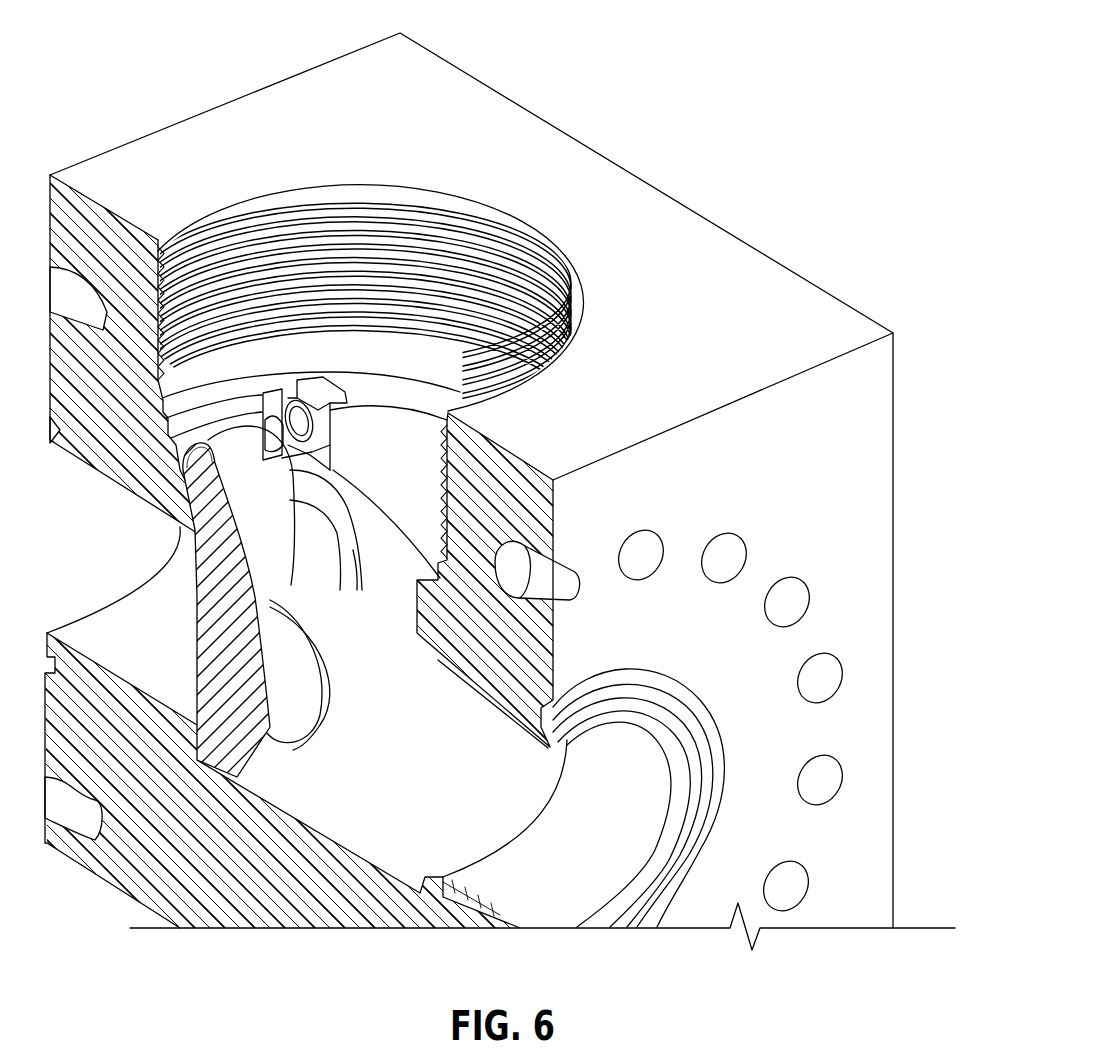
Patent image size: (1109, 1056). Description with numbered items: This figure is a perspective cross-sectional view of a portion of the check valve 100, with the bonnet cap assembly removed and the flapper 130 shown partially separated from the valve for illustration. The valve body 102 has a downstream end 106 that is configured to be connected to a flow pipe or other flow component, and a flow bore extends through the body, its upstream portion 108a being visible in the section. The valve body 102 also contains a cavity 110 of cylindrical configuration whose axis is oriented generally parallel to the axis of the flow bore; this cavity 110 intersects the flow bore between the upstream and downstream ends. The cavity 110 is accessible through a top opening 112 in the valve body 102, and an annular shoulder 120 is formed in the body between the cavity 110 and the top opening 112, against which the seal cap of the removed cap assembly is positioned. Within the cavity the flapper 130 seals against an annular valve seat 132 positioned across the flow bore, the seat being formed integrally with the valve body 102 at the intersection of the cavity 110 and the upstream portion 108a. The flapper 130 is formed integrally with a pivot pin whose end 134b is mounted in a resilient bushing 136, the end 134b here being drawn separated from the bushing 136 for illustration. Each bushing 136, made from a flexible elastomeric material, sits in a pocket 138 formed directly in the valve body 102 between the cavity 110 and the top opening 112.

The check valve 100 is at (554, 528).
The valve body 102 is at (831, 324).
The downstream end 106 is at (866, 600).
The upstream portion of the flow bore 108a is at (138, 660).
The cavity 110 is at (370, 863).
The top opening 112 is at (182, 262).
The annular shoulder 120 is at (425, 397).
The flapper 130 is at (292, 660).
The annular valve seat 132 is at (355, 548).
The end of the pivot pin 134b is at (272, 385).
The resilient bushing 136 is at (308, 380).
The pocket 138 is at (347, 393).